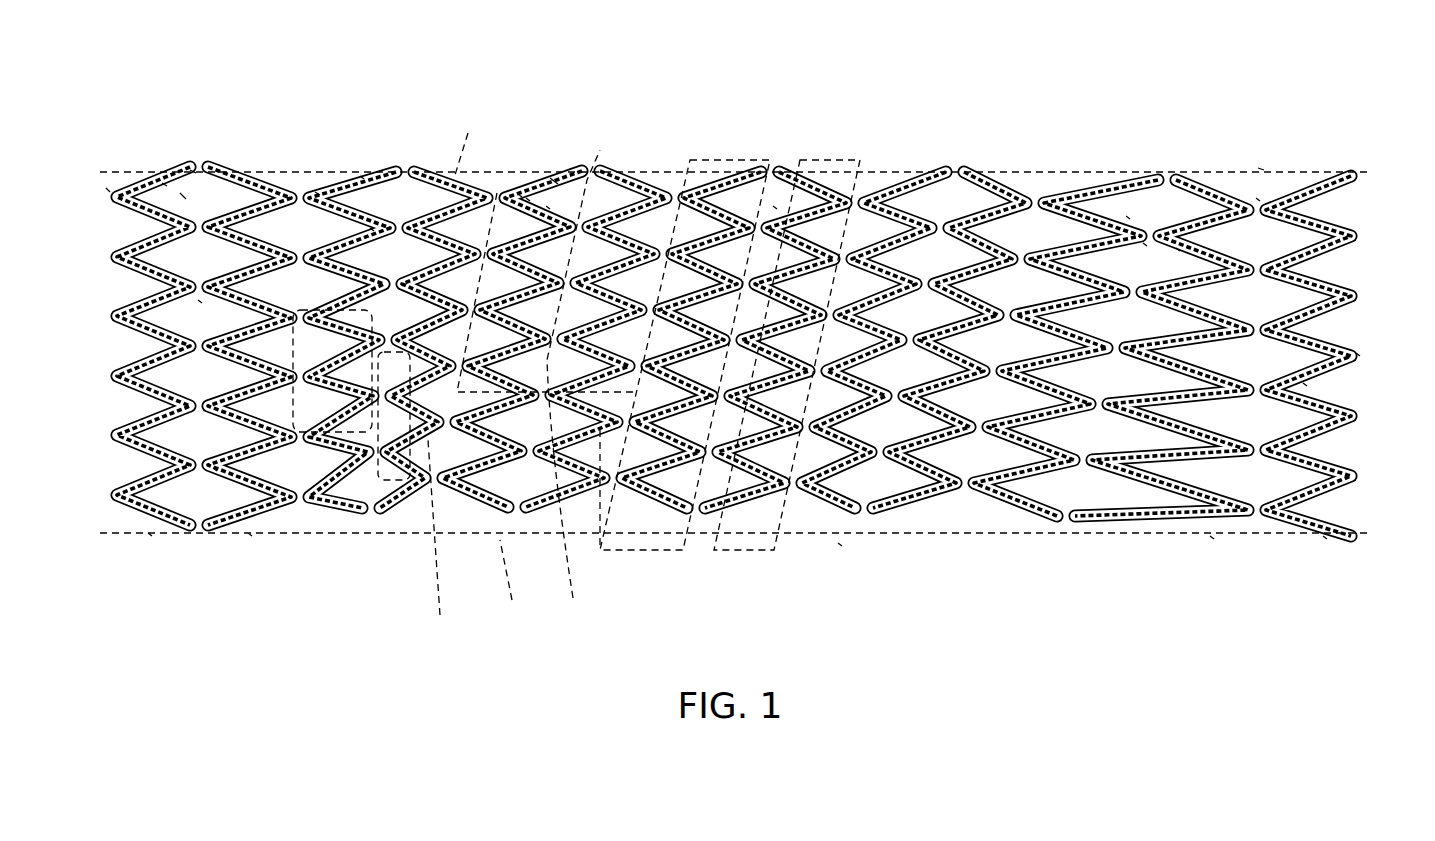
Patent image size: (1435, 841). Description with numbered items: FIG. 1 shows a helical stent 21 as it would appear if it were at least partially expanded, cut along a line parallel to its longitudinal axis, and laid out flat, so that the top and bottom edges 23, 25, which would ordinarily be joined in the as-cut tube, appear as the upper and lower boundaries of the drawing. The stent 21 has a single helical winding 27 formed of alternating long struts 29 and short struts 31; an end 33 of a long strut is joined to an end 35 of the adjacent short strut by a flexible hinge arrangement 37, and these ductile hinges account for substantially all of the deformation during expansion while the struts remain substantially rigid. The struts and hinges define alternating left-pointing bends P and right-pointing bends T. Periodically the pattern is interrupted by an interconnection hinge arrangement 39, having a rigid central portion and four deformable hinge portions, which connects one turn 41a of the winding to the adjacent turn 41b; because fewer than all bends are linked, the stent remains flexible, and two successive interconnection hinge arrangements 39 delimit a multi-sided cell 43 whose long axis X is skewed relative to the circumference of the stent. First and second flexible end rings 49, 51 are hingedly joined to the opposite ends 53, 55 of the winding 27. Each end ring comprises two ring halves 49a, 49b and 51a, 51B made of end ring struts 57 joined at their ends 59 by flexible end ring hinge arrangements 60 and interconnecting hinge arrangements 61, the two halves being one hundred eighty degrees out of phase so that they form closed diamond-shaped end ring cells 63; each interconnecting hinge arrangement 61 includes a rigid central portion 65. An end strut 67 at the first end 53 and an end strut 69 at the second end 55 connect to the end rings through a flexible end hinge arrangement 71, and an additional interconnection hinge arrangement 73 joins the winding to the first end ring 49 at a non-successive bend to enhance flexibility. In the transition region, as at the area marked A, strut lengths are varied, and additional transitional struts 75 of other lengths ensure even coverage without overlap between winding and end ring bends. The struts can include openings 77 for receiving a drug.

The helical stent 21 is at (757, 100).
The top edge 23 is at (469, 141).
The bottom edge 25 is at (513, 581).
The helical winding 27 is at (362, 178).
The long strut 29 is at (556, 182).
The short strut 31 is at (592, 184).
The end of long strut 33 is at (528, 200).
The end of short strut 35 is at (548, 208).
The flexible hinge arrangement 37 is at (520, 196).
The interconnection hinge arrangement 39 is at (775, 208).
The turn of the winding 41a is at (725, 160).
The adjacent turn of the winding 41b is at (850, 160).
The cell 43 is at (620, 550).
The first flexible end ring 49 is at (197, 172).
The first end ring half 49a is at (250, 535).
The second end ring half 49b is at (150, 535).
The second flexible end ring 51 is at (1262, 172).
The first end ring half of second end ring 51a is at (1325, 538).
The second end ring half of second end ring 51B is at (1212, 538).
The first end of helical winding 53 is at (330, 470).
The second end of helical winding 55 is at (1129, 220).
The end ring strut 57 is at (165, 185).
The end of end ring strut 59 is at (184, 196).
The flexible end ring hinge arrangement 60 is at (1358, 355).
The interconnecting hinge arrangement 61 is at (1305, 385).
The end ring cell 63 is at (734, 366).
The rigid central portion 65 is at (215, 470).
The end strut at first end 67 is at (395, 482).
The end strut at second end 69 is at (1145, 245).
The flexible end hinge arrangement 71 is at (1178, 250).
The interconnection hinge arrangement 73 is at (318, 194).
The transitional strut 75 is at (372, 230).
The opening 77 is at (848, 552).
The end region of helical winding A is at (438, 539).
The long axis of cell X is at (573, 385).
The left-pointing bend P is at (108, 190).
The right-pointing bend T is at (1258, 200).